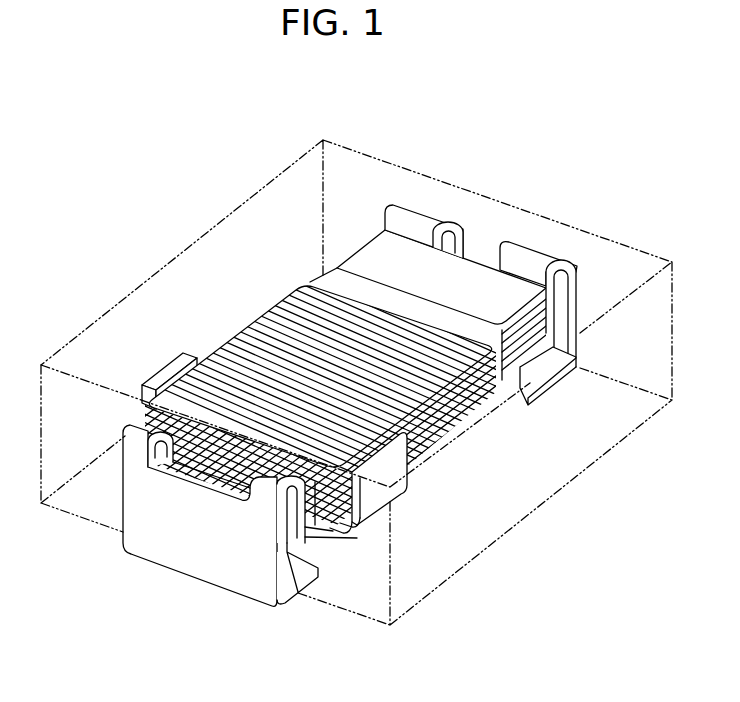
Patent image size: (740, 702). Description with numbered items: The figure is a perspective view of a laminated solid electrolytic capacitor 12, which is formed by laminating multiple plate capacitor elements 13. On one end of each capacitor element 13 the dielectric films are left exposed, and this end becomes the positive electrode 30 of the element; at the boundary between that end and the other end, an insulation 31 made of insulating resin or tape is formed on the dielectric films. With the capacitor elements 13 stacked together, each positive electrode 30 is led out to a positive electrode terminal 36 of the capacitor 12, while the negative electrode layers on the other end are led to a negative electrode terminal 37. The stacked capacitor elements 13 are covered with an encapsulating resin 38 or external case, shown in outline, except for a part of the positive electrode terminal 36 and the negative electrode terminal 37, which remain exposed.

The capacitor 12 is at (612, 140).
The capacitor element 13 is at (267, 306).
The positive electrode 30 is at (382, 248).
The insulation 31 is at (338, 282).
The positive electrode terminal 36 is at (513, 255).
The negative electrode terminal 37 is at (167, 540).
The encapsulating resin 38 is at (612, 262).